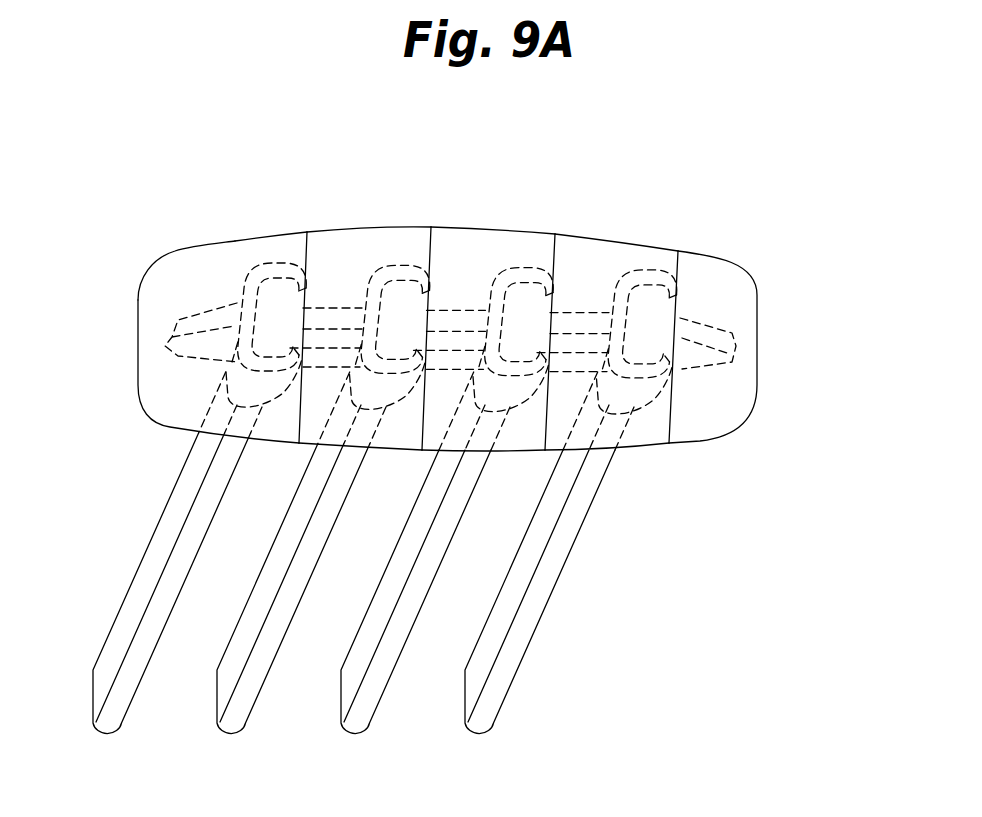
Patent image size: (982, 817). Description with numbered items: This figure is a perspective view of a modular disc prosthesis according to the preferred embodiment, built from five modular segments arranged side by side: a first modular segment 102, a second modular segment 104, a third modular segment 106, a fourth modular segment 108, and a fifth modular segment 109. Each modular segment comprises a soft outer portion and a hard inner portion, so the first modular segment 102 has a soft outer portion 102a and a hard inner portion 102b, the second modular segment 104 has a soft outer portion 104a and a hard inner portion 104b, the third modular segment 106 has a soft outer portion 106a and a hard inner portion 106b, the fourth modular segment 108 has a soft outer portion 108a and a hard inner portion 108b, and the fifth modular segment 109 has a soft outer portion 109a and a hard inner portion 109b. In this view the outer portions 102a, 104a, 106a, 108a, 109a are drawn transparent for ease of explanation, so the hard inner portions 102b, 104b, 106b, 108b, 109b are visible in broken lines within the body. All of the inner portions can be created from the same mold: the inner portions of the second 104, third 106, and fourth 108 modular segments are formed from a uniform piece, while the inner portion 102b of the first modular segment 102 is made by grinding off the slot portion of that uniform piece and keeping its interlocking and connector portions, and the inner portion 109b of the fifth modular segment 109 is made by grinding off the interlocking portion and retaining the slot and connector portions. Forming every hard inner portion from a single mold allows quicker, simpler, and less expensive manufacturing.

The first modular segment 102 is at (717, 265).
The soft outer portion 102a is at (733, 403).
The hard inner portion 102b is at (645, 320).
The second modular segment 104 is at (635, 454).
The soft outer portion 104a is at (638, 430).
The hard inner portion 104b is at (650, 270).
The third modular segment 106 is at (498, 430).
The soft outer portion 106a is at (472, 232).
The hard inner portion 106b is at (523, 267).
The fourth modular segment 108 is at (355, 415).
The soft outer portion 108a is at (335, 242).
The hard inner portion 108b is at (395, 267).
The fifth modular segment 109 is at (200, 458).
The soft outer portion 109a is at (172, 265).
The hard inner portion 109b is at (170, 333).